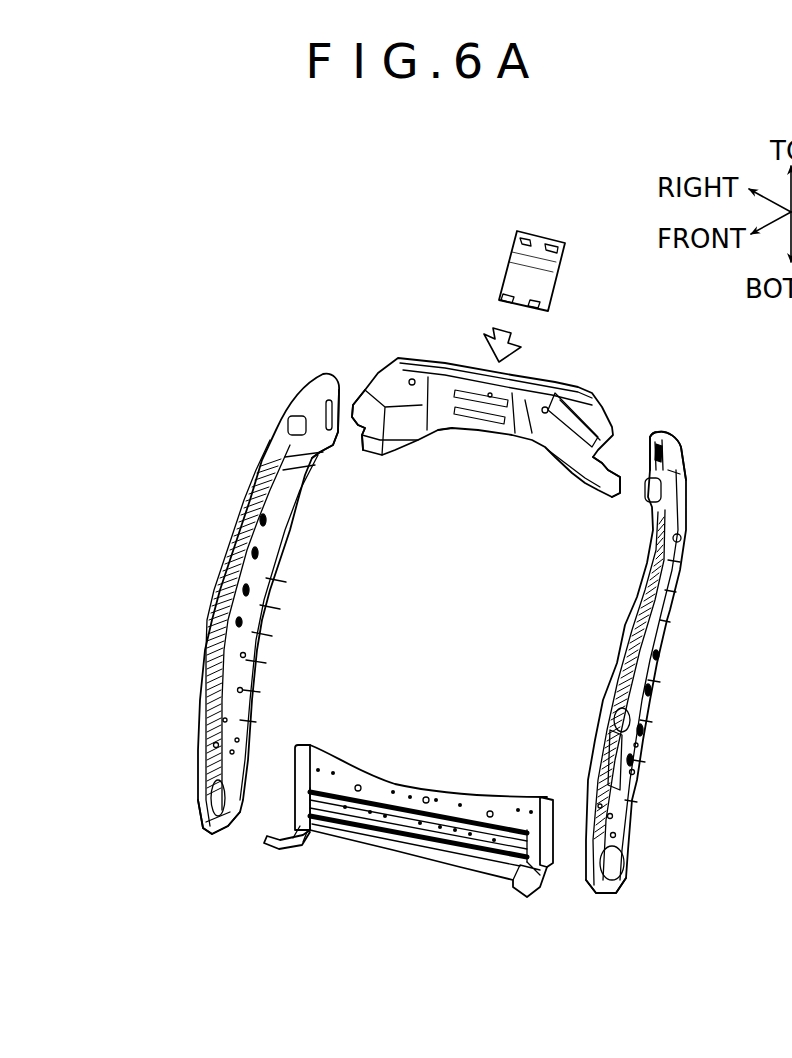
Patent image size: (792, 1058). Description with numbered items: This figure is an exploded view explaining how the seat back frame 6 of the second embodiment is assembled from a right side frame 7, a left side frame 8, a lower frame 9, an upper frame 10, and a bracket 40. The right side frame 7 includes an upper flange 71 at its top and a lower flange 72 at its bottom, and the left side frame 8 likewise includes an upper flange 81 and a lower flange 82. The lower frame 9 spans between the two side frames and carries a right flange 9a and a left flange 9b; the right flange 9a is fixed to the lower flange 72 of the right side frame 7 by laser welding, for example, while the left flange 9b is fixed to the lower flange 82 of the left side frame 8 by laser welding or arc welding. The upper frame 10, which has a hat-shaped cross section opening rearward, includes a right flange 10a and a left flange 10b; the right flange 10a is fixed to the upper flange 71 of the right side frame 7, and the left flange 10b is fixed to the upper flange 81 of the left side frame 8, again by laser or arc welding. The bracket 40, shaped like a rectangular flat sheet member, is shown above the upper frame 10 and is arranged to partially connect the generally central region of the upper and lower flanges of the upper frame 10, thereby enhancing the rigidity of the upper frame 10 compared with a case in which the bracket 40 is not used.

The seat back frame 6 is at (557, 203).
The right side frame 7 is at (247, 511).
The left side frame 8 is at (638, 597).
The lower frame 9 is at (412, 786).
The right flange 9a is at (300, 742).
The left flange 9b is at (552, 788).
The upper frame 10 is at (547, 392).
The right flange 10a is at (373, 364).
The left flange 10b is at (623, 419).
The bracket 40 is at (508, 262).
The upper flange 71 is at (334, 460).
The lower flange 72 is at (230, 822).
The upper flange 81 is at (686, 449).
The lower flange 82 is at (638, 864).